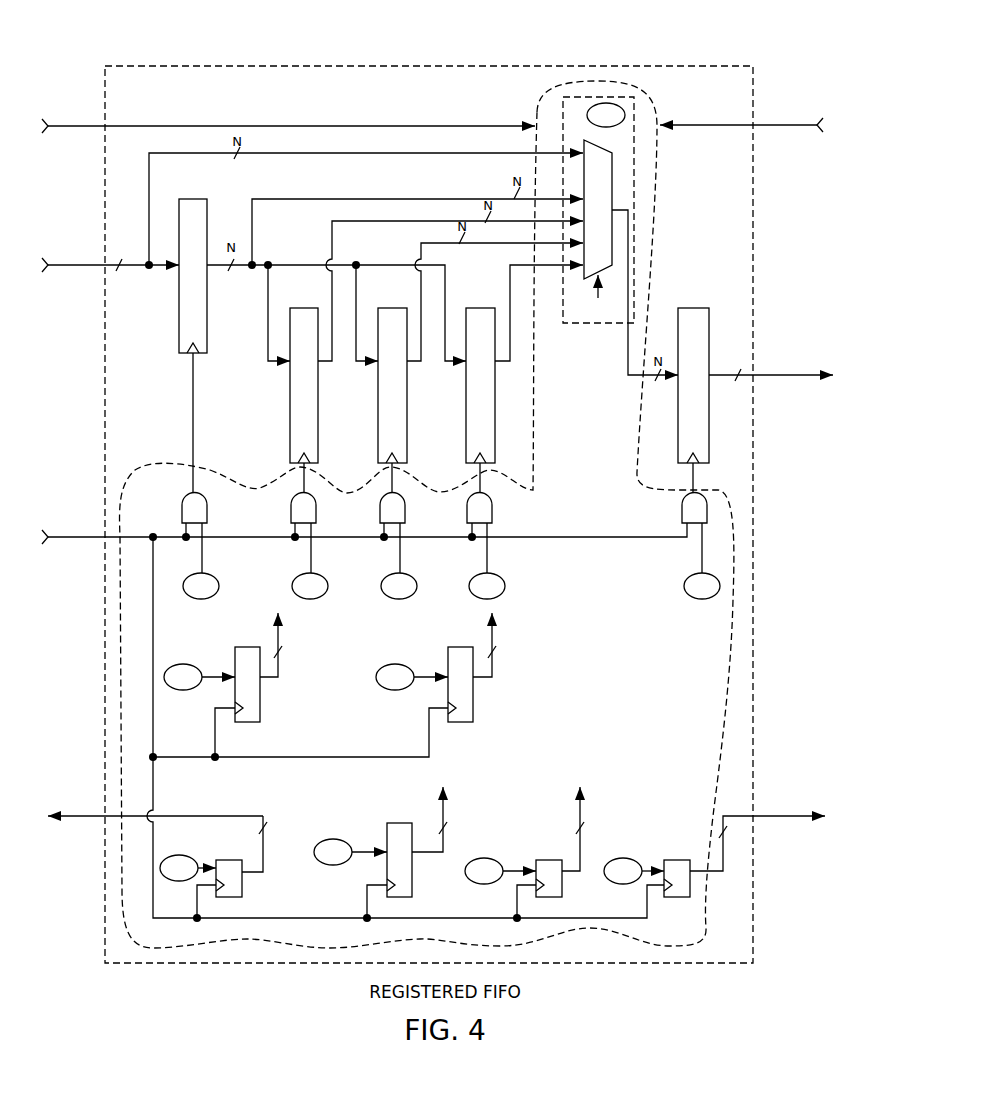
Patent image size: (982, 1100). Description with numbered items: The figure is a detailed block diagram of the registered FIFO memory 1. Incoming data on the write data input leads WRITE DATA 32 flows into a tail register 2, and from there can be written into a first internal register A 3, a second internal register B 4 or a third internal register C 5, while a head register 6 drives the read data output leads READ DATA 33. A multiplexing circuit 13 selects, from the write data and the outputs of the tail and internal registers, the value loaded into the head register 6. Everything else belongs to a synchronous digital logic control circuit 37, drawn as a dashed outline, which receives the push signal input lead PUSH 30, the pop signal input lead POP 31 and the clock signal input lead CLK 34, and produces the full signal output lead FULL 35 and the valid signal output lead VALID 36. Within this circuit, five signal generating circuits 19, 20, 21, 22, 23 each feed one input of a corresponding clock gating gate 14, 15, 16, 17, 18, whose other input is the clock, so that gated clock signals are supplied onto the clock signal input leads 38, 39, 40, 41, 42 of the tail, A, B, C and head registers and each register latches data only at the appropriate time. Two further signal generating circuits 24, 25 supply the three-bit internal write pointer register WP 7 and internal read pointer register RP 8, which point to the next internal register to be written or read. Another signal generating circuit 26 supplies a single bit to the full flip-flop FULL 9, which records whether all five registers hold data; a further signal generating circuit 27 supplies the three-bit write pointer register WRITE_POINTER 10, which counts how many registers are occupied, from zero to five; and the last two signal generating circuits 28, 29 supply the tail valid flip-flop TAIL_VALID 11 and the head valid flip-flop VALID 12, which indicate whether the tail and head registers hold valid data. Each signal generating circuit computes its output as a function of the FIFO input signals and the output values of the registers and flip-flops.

The registered FIFO memory 1 is at (313, 66).
The tail register 2 is at (193, 200).
The first internal register A 3 is at (304, 308).
The second internal register B 4 is at (392, 308).
The third internal register C 5 is at (480, 308).
The head register 6 is at (693, 308).
The internal write pointer register WP 7 is at (247, 646).
The internal read pointer register RP 8 is at (461, 646).
The full flip-flop FULL 9 is at (228, 859).
The write pointer register WRITE_POINTER 10 is at (396, 823).
The tail valid flip-flop TAIL_VALID 11 is at (548, 859).
The head valid flip-flop VALID 12 is at (678, 859).
The multiplexing circuit F1 13 is at (598, 323).
The clock gating gate 14 is at (207, 512).
The clock gating gate 15 is at (316, 512).
The clock gating gate 16 is at (405, 512).
The clock gating gate 17 is at (492, 512).
The clock gating gate 18 is at (682, 512).
The signal generating circuit F2 19 is at (219, 586).
The signal generating circuit F3 20 is at (328, 586).
The signal generating circuit F4 21 is at (417, 586).
The signal generating circuit F5 22 is at (505, 586).
The signal generating circuit F6 23 is at (684, 586).
The signal generating circuit F7 24 is at (183, 664).
The signal generating circuit F8 25 is at (395, 664).
The signal generating circuit F9 26 is at (179, 855).
The signal generating circuit F10 27 is at (333, 839).
The signal generating circuit F11 28 is at (484, 857).
The signal generating circuit F12 29 is at (623, 857).
The push signal input lead PUSH 30 is at (93, 118).
The pop signal input lead POP 31 is at (770, 118).
The write data input leads WRITE DATA 32 is at (77, 276).
The read data output leads READ DATA 33 is at (783, 386).
The clock signal input lead CLK 34 is at (93, 529).
The full signal output lead FULL 35 is at (93, 808).
The valid signal output lead VALID 36 is at (800, 808).
The synchronous digital logic control circuit 37 is at (537, 98).
The clock signal input lead 38 is at (190, 362).
The clock signal input lead 39 is at (300, 467).
The clock signal input lead 40 is at (388, 467).
The clock signal input lead 41 is at (476, 467).
The clock signal input lead 42 is at (689, 467).